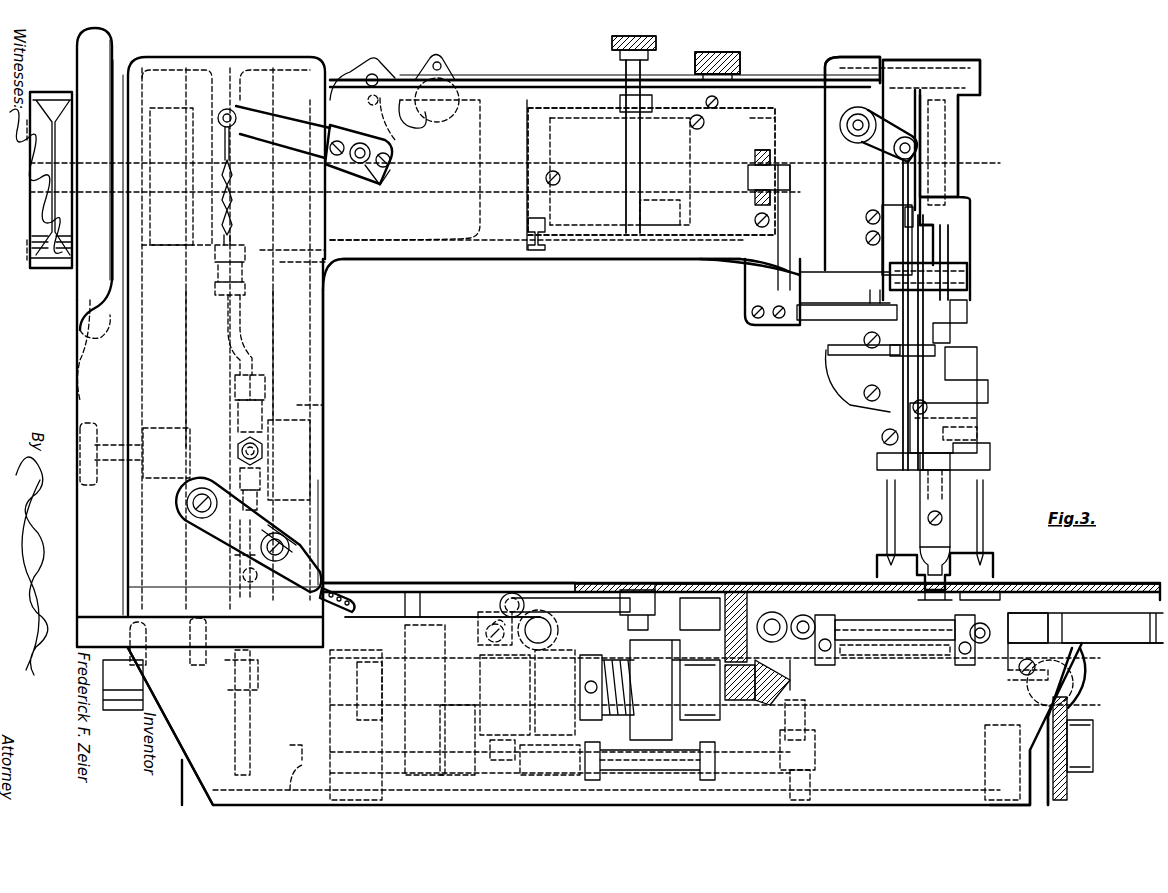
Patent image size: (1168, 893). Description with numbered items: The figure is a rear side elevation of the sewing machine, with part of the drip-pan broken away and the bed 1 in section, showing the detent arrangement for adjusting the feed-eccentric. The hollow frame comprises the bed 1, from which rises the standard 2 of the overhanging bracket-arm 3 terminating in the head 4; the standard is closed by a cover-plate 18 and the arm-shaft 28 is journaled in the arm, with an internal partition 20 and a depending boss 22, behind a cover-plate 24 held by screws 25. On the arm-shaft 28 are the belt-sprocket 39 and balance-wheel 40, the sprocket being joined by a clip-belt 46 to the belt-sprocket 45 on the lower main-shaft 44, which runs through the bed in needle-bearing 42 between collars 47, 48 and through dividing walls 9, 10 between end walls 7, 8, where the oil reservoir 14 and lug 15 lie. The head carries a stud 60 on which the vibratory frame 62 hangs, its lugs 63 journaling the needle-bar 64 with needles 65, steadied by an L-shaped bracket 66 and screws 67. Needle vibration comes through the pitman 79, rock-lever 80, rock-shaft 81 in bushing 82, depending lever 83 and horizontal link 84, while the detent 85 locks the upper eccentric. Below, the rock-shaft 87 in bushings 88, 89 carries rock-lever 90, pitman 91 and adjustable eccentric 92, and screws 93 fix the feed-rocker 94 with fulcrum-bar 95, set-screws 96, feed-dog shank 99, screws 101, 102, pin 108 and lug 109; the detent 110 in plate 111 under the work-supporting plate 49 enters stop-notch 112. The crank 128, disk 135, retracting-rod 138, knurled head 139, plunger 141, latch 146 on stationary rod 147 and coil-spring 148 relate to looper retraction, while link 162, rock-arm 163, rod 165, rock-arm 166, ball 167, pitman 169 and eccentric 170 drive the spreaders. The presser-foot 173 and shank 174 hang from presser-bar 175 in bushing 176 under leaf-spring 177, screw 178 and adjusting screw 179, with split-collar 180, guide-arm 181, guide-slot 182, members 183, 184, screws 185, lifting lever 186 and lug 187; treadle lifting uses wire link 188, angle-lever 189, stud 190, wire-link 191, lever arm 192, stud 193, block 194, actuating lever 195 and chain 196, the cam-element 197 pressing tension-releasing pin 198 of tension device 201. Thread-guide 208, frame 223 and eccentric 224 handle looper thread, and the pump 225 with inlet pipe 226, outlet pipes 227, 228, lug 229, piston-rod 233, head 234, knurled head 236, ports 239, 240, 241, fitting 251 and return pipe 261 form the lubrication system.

The bed 1 is at (444, 612).
The standard 2 is at (325, 345).
The bracket-arm 3 is at (452, 260).
The head 4 is at (866, 58).
The end wall 7 is at (1010, 712).
The end wall 8 is at (215, 765).
The transverse dividing wall 9 is at (725, 626).
The transverse dividing wall 10 is at (388, 783).
The oil reservoir 14 is at (300, 750).
The lug 15 is at (293, 790).
The cover-plate 18 is at (80, 390).
The internal partition 20 is at (246, 78).
The depending boss 22 is at (554, 145).
The cover-plate 24 is at (578, 123).
The screws 25 is at (694, 128).
The arm-shaft 28 is at (405, 170).
The belt-sprocket 39 is at (214, 100).
The balance-wheel 40 is at (80, 287).
The needle-bearing 42 is at (392, 728).
The lower main-shaft 44 is at (470, 676).
The belt-sprocket 45 is at (129, 632).
The clip-belt 46 is at (188, 316).
The collar 47 is at (357, 668).
The collar 48 is at (450, 722).
The work-supporting plate 49 is at (425, 582).
The stud 60 is at (946, 68).
The vibratory frame 62 is at (955, 123).
The lugs 63 is at (950, 210).
The needle-bar 64 is at (950, 250).
The needles 65 is at (887, 509).
The L-shaped bracket 66 is at (978, 421).
The screws 67 is at (882, 436).
The pitman 79 is at (770, 168).
The rock-lever 80 is at (790, 206).
The rock-shaft 81 is at (780, 322).
The bushing 82 is at (920, 286).
The depending lever 83 is at (968, 316).
The horizontal link 84 is at (989, 393).
The detent 85 is at (720, 58).
The feed-advance and -return rock-shaft 87 is at (800, 670).
The bushing 88 is at (1002, 650).
The bushing 89 is at (757, 688).
The rock-lever 90 is at (733, 664).
The pitman 91 is at (692, 706).
The adjustable eccentric 92 is at (645, 718).
The screws 93 is at (826, 636).
The feed-rocker 94 is at (945, 666).
The fulcrum-bar 95 is at (870, 620).
The set-screws 96 is at (806, 615).
The shank 99 is at (985, 592).
The screw 101 is at (896, 655).
The screw 102 is at (925, 598).
The pin 108 is at (736, 592).
The lug 109 is at (773, 612).
The detent 110 is at (636, 590).
The plate 111 is at (690, 584).
The stop-notch 112 is at (630, 645).
The crank 128 is at (806, 713).
The disk 135 is at (1068, 790).
The retracting-rod 138 is at (1073, 683).
The knurled head 139 is at (1085, 665).
The taper-headed plunger 141 is at (1048, 787).
The latch 146 is at (816, 744).
The stationary rod 147 is at (650, 762).
The coil-spring 148 is at (811, 784).
The link 162 is at (565, 598).
The rock-arm 163 is at (508, 605).
The rod 165 is at (546, 632).
The second rock-arm 166 is at (486, 630).
The ball 167 is at (496, 630).
The pitman 169 is at (490, 648).
The eccentric 170 is at (510, 716).
The presser foot 173 is at (990, 555).
The foot shank 174 is at (927, 545).
The presser-bar 175 is at (919, 496).
The bushing 176 is at (956, 466).
The leaf-spring 177 is at (736, 262).
The screw 178 is at (538, 251).
The adjusting screw 179 is at (626, 68).
The split-collar 180 is at (951, 338).
The guide-arm 181 is at (900, 357).
The guide-slot 182 is at (880, 322).
The parallel member 183 is at (905, 215).
The parallel member 184 is at (878, 272).
The screws 185 is at (865, 218).
The presser-foot lifting lever 186 is at (912, 409).
The lug 187 is at (832, 368).
The wire link 188 is at (902, 172).
The angle-lever 189 is at (893, 135).
The stud 190 is at (857, 117).
The horizontal wire-link 191 is at (536, 82).
The lever arm 192 is at (378, 78).
The stud 193 is at (360, 164).
The inclined block 194 is at (386, 172).
The actuating lever 195 is at (281, 122).
The chain 196 is at (236, 208).
The cam-element 197 is at (425, 137).
The tension-releasing pin 198 is at (407, 132).
The tension device 201 is at (340, 72).
The thread-guide 208 is at (335, 586).
The frame 223 is at (560, 740).
The eccentric 224 is at (557, 691).
The pump 225 is at (213, 430).
The inlet pipe 226 is at (260, 735).
The outlet pipe 227 is at (236, 564).
The outlet pipe 228 is at (238, 357).
The lug 229 is at (310, 422).
The piston-rod 233 is at (110, 444).
The head 234 is at (175, 419).
The knurled head 236 is at (92, 486).
The inlet port 239 is at (236, 470).
The outlet port 240 is at (237, 405).
The outlet port 241 is at (236, 448).
The fitting 251 is at (215, 266).
The return pipe 261 is at (270, 328).